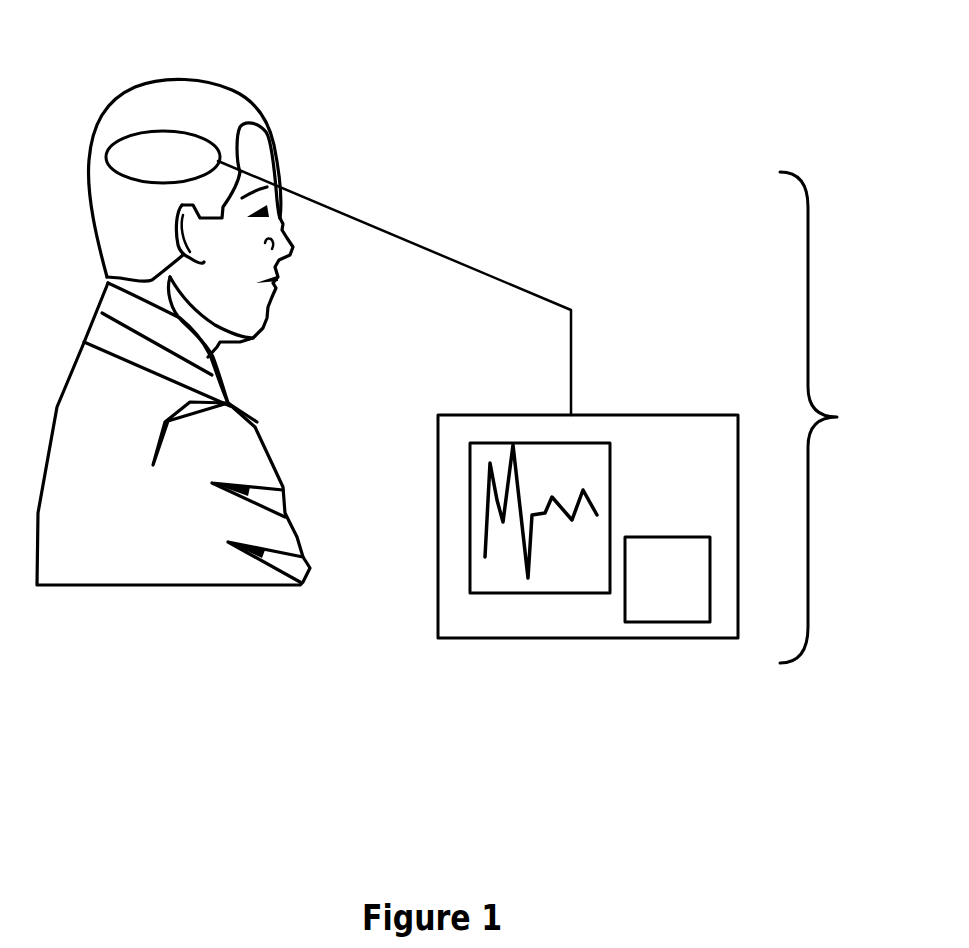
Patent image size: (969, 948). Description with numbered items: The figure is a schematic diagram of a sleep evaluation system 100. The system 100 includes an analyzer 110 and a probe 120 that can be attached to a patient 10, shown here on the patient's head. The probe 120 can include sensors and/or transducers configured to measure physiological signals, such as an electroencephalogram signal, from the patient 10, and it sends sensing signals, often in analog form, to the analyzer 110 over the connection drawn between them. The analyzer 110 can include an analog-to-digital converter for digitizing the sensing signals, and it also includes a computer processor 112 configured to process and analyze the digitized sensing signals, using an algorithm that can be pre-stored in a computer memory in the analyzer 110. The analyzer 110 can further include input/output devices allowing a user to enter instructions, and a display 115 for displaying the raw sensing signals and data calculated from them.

The patient 10 is at (235, 105).
The sleep evaluation system 100 is at (836, 417).
The analyzer 110 is at (670, 463).
The computer processor 112 is at (652, 598).
The display 115 is at (499, 580).
The probe 120 is at (165, 143).